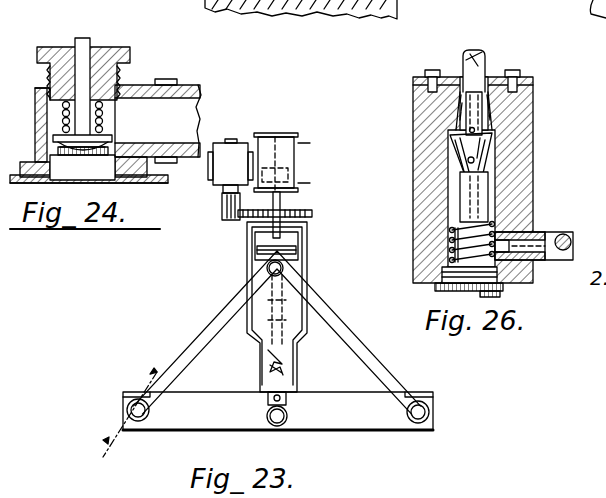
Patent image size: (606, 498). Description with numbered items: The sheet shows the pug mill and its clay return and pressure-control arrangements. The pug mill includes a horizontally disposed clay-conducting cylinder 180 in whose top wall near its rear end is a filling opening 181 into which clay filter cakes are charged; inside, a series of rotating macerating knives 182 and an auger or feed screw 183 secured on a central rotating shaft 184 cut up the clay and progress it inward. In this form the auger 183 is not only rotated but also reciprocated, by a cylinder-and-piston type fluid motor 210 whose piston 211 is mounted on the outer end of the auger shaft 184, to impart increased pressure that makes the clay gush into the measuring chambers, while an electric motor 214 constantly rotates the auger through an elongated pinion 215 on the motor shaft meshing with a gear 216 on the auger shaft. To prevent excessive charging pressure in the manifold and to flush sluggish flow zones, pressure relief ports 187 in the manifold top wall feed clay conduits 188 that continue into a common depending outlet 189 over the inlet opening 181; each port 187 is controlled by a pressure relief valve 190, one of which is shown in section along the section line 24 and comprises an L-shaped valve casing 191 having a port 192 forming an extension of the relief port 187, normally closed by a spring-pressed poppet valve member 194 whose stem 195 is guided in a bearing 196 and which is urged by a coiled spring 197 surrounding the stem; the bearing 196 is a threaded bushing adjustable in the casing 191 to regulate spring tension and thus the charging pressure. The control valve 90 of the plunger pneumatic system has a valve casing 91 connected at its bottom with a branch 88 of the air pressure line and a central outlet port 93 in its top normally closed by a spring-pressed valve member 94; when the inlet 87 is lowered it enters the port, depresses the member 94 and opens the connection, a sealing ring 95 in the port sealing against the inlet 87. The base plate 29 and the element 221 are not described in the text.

In FIG. 23, the section line 24— 24 is at (115, 404).
In FIG. 24, the base plate 29 is at (156, 181).
In FIG. 23, the base plate 29 is at (383, 424).
In FIG. 26, the inlet 87 is at (470, 60).
In FIG. 26, the branch of the air pressure line 88 is at (556, 261).
In FIG. 26, the valve 90 is at (534, 169).
In FIG. 26, the valve casing 91 is at (534, 191).
In FIG. 26, the central outlet port 93 is at (482, 133).
In FIG. 26, the spring-pressed valve member 94 is at (448, 145).
In FIG. 26, the sealing ring 95 is at (488, 92).
In FIG. 23, the clay-conducting cylinder 180 is at (308, 243).
In FIG. 23, the filling opening 181 is at (254, 243).
In FIG. 23, the macerating knives 182 is at (256, 253).
In FIG. 23, the auger or feed screw 183 is at (261, 372).
In FIG. 23, the rotating shaft 184 is at (281, 202).
In FIG. 24, the pressure relief port 187 is at (90, 158).
In FIG. 24, the clay conduit 188 is at (200, 93).
In FIG. 23, the clay conduit 188 is at (196, 352).
In FIG. 23, the common depending outlet 189 is at (284, 269).
In FIG. 24, the pressure relief valve 190 is at (134, 82).
In FIG. 23, the pressure relief valve 190 is at (123, 404).
In FIG. 24, the L-shaped valve casing 191 is at (40, 88).
In FIG. 24, the port 192 is at (115, 153).
In FIG. 24, the spring-pressed poppet valve member 194 is at (79, 156).
In FIG. 24, the stem 195 is at (88, 38).
In FIG. 24, the bearing 196 is at (117, 54).
In FIG. 24, the coiled spring 197 is at (118, 103).
In FIG. 23, the cylinder-and-piston type fluid motor 210 is at (299, 158).
In FIG. 23, the piston 211 is at (289, 172).
In FIG. 23, the electric motor 214 is at (241, 146).
In FIG. 23, the elongated pinion 215 is at (222, 200).
In FIG. 23, the gear 216 is at (313, 213).
In FIG. 23, the drum 221 is at (362, 12).